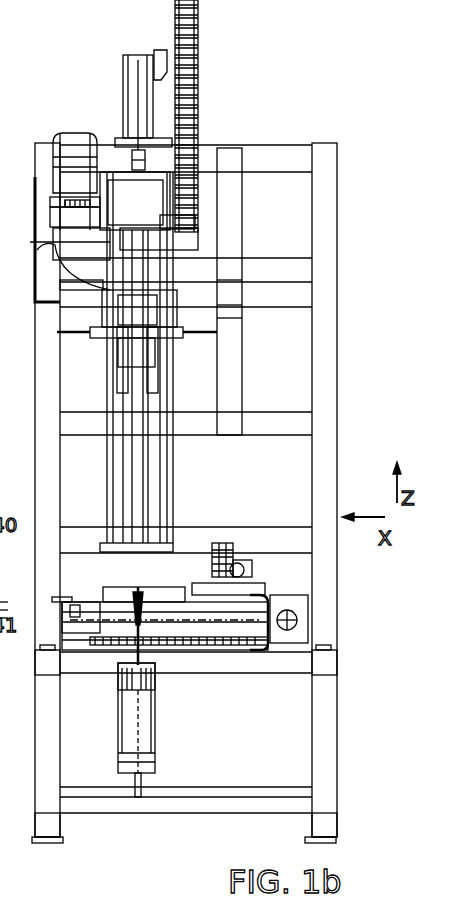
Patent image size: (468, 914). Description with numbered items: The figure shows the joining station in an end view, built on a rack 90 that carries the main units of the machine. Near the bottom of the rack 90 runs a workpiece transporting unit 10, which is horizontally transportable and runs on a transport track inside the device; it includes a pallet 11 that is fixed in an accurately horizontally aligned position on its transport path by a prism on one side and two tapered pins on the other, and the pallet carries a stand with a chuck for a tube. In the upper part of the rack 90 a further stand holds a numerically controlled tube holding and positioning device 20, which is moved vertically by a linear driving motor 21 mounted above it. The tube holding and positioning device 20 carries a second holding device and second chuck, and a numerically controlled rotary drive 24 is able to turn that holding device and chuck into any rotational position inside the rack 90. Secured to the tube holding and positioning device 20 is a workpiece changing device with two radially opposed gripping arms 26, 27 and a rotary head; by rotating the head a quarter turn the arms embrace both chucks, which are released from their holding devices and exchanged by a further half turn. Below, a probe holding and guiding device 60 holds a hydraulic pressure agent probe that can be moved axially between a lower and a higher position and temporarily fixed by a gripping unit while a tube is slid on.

The workpiece transporting unit 10 is at (280, 583).
The pallet 11 is at (272, 616).
The tube holding and positioning device 20 is at (210, 228).
The linear driving motor 21 is at (133, 62).
The rotary drive 24 is at (72, 137).
The gripping arm 26 is at (82, 340).
The gripping arm 27 is at (200, 338).
The probe holding and guiding device 60 is at (117, 715).
The rack 90 is at (47, 707).